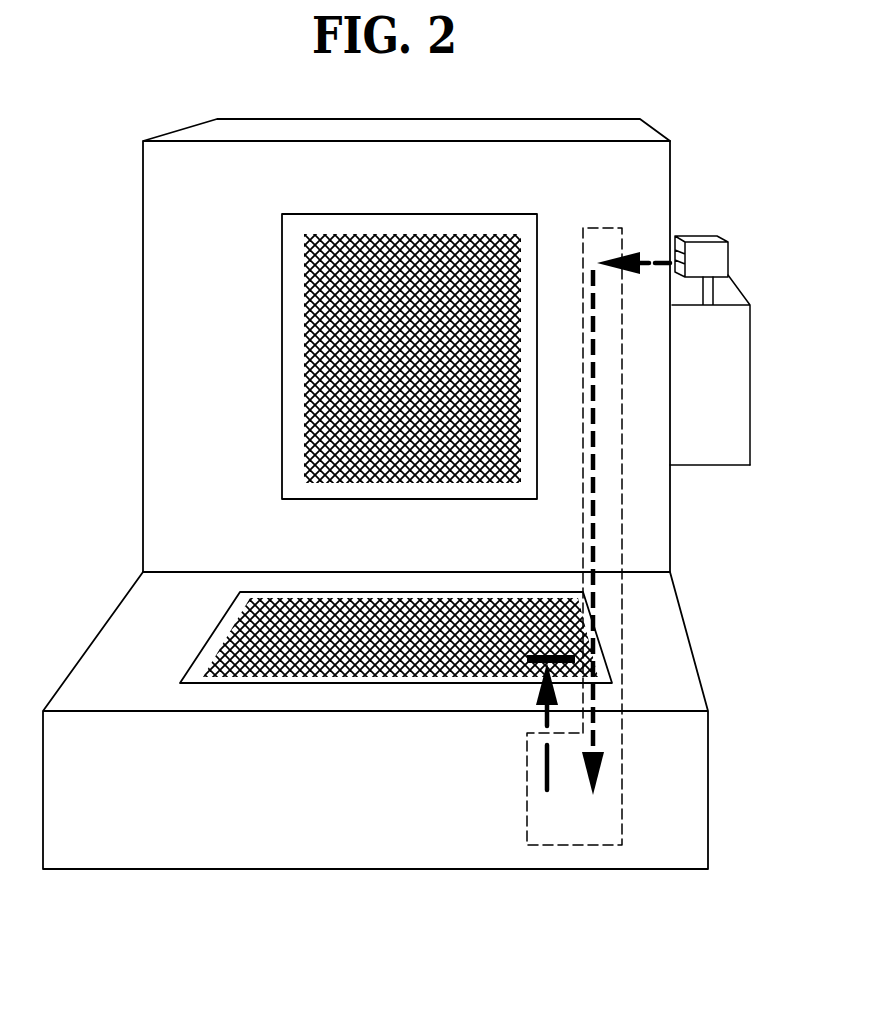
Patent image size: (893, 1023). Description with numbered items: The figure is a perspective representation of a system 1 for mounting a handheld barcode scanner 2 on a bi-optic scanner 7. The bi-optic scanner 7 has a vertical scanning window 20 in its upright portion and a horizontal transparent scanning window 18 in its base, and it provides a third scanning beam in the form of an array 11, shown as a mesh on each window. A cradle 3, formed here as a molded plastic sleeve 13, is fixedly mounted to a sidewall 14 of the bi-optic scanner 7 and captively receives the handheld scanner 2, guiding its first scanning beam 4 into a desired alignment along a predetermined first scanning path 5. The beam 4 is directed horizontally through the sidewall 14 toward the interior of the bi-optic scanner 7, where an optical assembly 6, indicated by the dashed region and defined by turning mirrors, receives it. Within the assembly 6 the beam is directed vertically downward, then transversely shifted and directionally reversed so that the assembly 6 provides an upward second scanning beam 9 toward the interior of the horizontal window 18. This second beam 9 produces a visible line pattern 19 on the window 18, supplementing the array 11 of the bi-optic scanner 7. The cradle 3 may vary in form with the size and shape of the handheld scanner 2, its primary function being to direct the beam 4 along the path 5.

The system 1 is at (738, 147).
The handheld barcode scanner 2 is at (718, 262).
The cradle 3 is at (733, 372).
The first scanning beam 4 is at (667, 258).
The first scanning path 5 is at (641, 266).
The optical assembly 6 is at (607, 508).
The bi-optic scanner 7 is at (178, 342).
The second scanning beam 9 is at (545, 722).
The array 11 is at (327, 305).
The molded plastic sleeve 13 is at (727, 437).
The sidewall 14 is at (672, 557).
The horizontal transparent scanning window 18 is at (190, 675).
The visible line pattern 19 is at (530, 658).
The vertical scanning window 20 is at (292, 446).